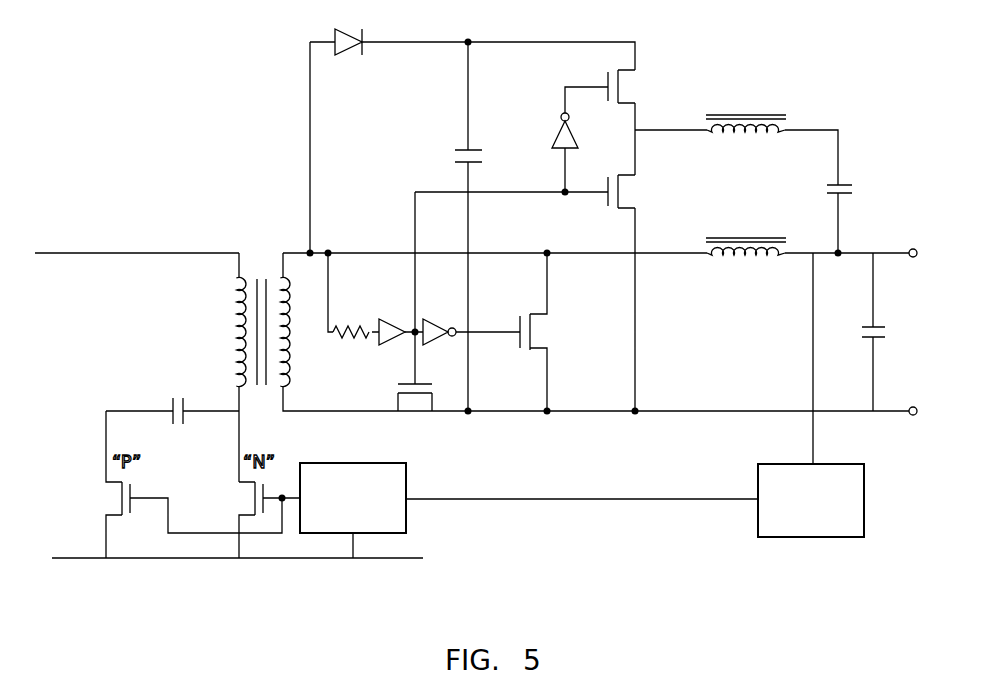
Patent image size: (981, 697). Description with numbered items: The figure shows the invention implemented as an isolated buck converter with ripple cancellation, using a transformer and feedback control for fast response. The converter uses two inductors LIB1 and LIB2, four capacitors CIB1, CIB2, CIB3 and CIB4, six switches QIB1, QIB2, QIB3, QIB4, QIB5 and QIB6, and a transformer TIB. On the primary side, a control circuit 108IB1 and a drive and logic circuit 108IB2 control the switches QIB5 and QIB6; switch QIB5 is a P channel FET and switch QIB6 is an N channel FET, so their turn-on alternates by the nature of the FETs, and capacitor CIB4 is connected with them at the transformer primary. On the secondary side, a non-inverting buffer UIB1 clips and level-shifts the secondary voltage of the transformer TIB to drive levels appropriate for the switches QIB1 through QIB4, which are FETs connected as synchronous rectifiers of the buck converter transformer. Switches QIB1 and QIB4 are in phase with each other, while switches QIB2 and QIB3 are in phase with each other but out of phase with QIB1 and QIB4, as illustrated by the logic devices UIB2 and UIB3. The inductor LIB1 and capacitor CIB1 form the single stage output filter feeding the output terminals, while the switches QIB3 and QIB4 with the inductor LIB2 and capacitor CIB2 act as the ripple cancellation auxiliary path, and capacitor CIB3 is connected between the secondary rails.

The transformer TIB is at (250, 248).
The capacitor CIB3 is at (492, 161).
The logic device UIB3 is at (588, 131).
The switch QIB3 is at (642, 87).
The switch QIB4 is at (642, 191).
The inductor LIB2 is at (746, 142).
The capacitor CIB2 is at (863, 194).
The inductor LIB1 is at (746, 266).
The capacitor CIB1 is at (898, 334).
The non-inverting buffer UIB1 is at (381, 318).
The logic device UIB2 is at (441, 318).
The switch QIB2 is at (553, 332).
The switch QIB1 is at (414, 413).
The capacitor CIB4 is at (178, 395).
The switch QIB5 is at (99, 498).
The switch QIB6 is at (230, 498).
The drive and logic circuit 108IB2 is at (409, 517).
The control circuit 108IB1 is at (803, 541).